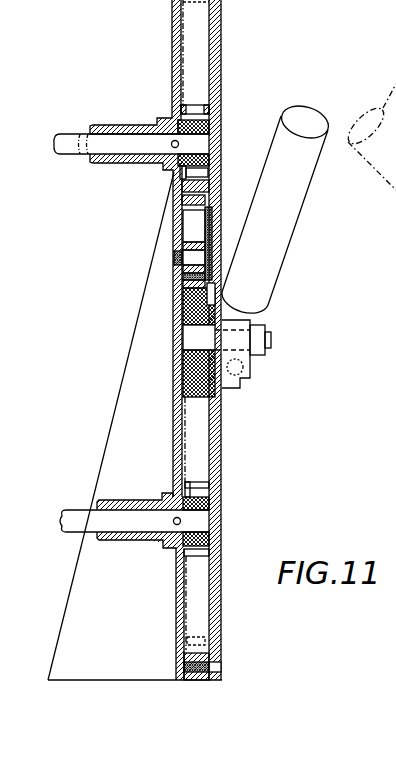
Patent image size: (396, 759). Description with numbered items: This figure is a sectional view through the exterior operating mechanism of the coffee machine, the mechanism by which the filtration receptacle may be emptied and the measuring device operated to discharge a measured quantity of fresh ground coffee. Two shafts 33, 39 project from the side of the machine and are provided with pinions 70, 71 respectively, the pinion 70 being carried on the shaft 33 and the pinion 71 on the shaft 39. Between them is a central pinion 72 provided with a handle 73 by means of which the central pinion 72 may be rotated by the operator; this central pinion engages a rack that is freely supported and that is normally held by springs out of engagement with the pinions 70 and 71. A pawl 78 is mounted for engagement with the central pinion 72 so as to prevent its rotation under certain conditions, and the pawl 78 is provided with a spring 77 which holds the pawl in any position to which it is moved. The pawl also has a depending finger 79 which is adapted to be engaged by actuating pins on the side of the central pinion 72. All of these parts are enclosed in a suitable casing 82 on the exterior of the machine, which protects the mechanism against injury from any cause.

The shaft 33 is at (67, 137).
The shaft 39 is at (70, 512).
The pinion 70 is at (206, 114).
The pinion 71 is at (208, 497).
The central pinion 72 is at (200, 315).
The handle 73 is at (280, 220).
The spring 77 is at (216, 215).
The pawl 78 is at (183, 267).
The depending finger 79 is at (213, 297).
The casing 82 is at (219, 49).